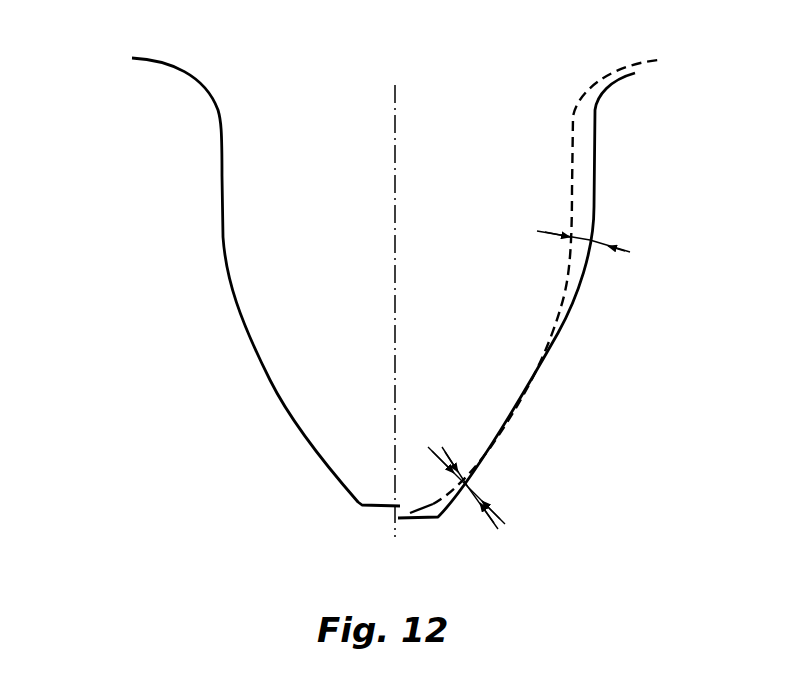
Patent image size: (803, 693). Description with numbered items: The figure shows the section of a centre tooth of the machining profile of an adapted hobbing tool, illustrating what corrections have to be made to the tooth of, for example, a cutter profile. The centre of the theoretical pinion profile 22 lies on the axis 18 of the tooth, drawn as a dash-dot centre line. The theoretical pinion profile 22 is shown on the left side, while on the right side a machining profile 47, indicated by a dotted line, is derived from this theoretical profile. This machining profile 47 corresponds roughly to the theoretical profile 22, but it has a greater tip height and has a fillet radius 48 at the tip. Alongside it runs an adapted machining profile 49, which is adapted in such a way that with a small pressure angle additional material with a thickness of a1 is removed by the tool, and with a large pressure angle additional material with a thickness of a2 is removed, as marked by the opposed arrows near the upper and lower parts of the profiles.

The theoretical pinion profile 22 is at (222, 176).
The axis of the tooth 18 is at (395, 203).
The machining profile 47 is at (568, 177).
The fillet radius 48 is at (427, 498).
The adapted machining profile 49 is at (595, 207).
The thickness of additional material removed at small pressure angle a1 is at (583, 259).
The thickness of additional material removed at large pressure angle a2 is at (466, 498).